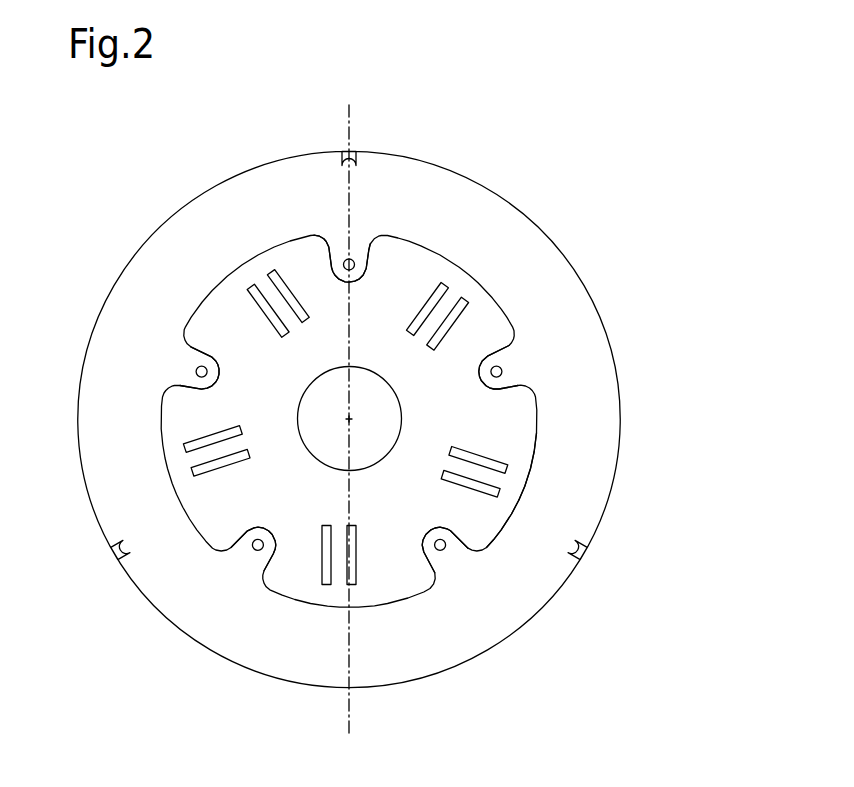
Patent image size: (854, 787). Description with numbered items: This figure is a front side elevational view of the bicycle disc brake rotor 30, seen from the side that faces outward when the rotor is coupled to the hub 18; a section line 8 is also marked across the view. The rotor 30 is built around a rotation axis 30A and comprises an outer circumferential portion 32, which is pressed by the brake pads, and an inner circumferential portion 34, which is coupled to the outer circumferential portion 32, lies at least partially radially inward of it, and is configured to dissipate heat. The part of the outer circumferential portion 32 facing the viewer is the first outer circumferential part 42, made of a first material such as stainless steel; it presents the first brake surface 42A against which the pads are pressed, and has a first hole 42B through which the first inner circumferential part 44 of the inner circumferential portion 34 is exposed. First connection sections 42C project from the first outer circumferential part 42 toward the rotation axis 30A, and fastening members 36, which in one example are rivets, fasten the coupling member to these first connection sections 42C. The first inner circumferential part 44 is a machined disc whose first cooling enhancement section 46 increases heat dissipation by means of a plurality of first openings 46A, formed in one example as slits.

The section line 8- 8 is at (349, 105).
The hub 18 is at (310, 412).
The bicycle disc brake rotor 30 is at (655, 152).
The rotation axis 30A is at (349, 419).
The outer circumferential portion 32 is at (737, 502).
The inner circumferential portion 34 is at (530, 412).
The fastening members 36 is at (347, 258).
The first outer circumferential part 42 is at (687, 495).
The first brake surface 42A is at (588, 495).
The first hole 42B is at (517, 490).
The first connection sections 42C is at (457, 537).
The first inner circumferential part 44 is at (523, 440).
The first cooling enhancement section 46 is at (371, 597).
The first openings 46A is at (320, 576).